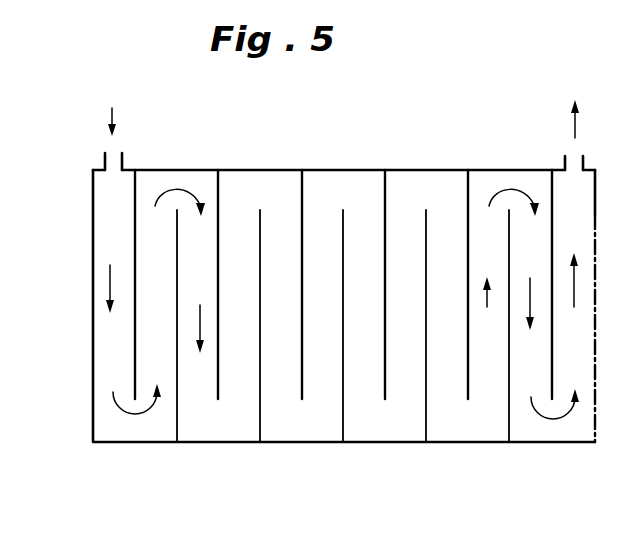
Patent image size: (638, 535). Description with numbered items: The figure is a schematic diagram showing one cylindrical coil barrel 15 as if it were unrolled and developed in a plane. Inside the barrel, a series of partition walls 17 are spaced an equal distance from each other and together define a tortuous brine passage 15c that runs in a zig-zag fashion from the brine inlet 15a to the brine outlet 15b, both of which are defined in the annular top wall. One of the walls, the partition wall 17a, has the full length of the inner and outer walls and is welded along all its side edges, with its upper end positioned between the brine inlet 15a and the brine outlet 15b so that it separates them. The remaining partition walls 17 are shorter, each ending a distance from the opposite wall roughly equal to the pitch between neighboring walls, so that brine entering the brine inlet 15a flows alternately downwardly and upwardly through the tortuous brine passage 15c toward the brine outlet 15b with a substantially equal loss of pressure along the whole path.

The coil barrel 15 is at (355, 167).
The brine inlet 15a is at (112, 158).
The brine outlet 15b is at (578, 158).
The tortuous brine passage 15c is at (285, 190).
The partition walls 17 is at (135, 362).
The partition wall 17a is at (93, 272).